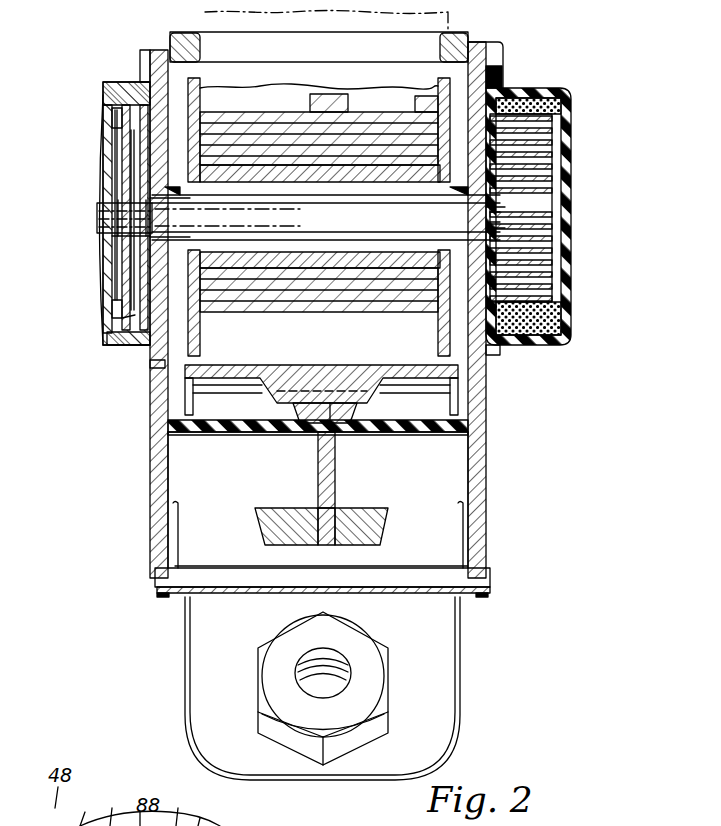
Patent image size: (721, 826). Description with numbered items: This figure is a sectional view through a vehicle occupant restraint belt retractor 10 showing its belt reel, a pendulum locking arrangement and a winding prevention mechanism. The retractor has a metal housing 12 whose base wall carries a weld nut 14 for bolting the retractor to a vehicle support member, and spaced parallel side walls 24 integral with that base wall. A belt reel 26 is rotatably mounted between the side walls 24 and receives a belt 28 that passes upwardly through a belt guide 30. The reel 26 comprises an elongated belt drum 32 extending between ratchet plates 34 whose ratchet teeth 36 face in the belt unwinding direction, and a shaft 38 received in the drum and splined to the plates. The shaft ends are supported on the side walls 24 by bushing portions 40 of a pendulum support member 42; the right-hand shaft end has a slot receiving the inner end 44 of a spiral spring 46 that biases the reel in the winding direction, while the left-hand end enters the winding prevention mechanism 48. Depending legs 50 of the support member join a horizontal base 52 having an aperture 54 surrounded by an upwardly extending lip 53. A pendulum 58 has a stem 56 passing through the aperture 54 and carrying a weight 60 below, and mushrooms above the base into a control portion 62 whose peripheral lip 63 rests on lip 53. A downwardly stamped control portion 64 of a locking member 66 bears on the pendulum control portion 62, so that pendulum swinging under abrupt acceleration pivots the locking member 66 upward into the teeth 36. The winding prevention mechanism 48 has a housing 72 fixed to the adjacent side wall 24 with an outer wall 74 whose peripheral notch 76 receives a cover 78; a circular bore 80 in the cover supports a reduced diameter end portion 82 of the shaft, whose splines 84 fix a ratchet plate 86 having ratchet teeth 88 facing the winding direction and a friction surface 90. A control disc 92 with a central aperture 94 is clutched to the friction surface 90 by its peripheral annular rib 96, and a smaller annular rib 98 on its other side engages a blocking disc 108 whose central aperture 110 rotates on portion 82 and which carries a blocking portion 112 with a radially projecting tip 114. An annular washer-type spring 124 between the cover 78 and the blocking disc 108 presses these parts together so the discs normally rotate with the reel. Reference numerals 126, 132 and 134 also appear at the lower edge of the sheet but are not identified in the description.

The vehicle occupant restraint belt retractor 10 is at (505, 50).
The retractor housing 12 is at (150, 516).
The weld nut 14 is at (372, 683).
The side walls 24 is at (160, 464).
The belt reel 26 is at (172, 64).
The belt 28 is at (445, 32).
The belt guide 30 is at (185, 58).
The belt drum 32 is at (385, 182).
The ratchet plates 34 is at (330, 72).
The ratchet teeth 36 is at (200, 82).
The reel shaft 38 is at (292, 150).
The bushing portions 40 is at (280, 140).
The pendulum support member 42 is at (456, 435).
The inner end of spiral spring 44 is at (488, 214).
The spiral spring 46 is at (545, 118).
The winding prevention mechanism 48 is at (88, 88).
The depending legs 50 is at (168, 352).
The base 52 is at (246, 432).
The upwardly extending lip 53 is at (300, 434).
The aperture 54 is at (336, 440).
The stem 56 is at (336, 480).
The pendulum 58 is at (272, 500).
The weight 60 is at (275, 525).
The pendulum control portion 62 is at (298, 418).
The peripheral lip 63 is at (352, 418).
The control portion of locking member 64 is at (285, 395).
The locking member 66 is at (375, 384).
The housing of winding prevention mechanism 72 is at (125, 345).
The outer wall 74 is at (115, 340).
The peripheral notch 76 is at (110, 100).
The cover 78 is at (103, 170).
The circular bore 80 is at (118, 222).
The reduced diameter end portion 82 is at (112, 245).
The splines 84 is at (260, 212).
The ratchet plate 86 is at (124, 138).
The ratchet teeth 88 is at (215, 432).
The friction surface 90 is at (128, 300).
The control disc 92 is at (120, 318).
The central aperture of control disc 94 is at (150, 205).
The peripheral annular rib 96 is at (138, 118).
The annular rib 98 is at (112, 148).
The blocking disc 108 is at (112, 118).
The central aperture of blocking disc 110 is at (97, 212).
The blocking portion 112 is at (208, 813).
The tip 114 is at (183, 807).
The annular washer-type spring 124 is at (130, 182).
The link 126 is at (111, 814).
The arm 132 is at (75, 811).
The bracket 134 is at (115, 804).